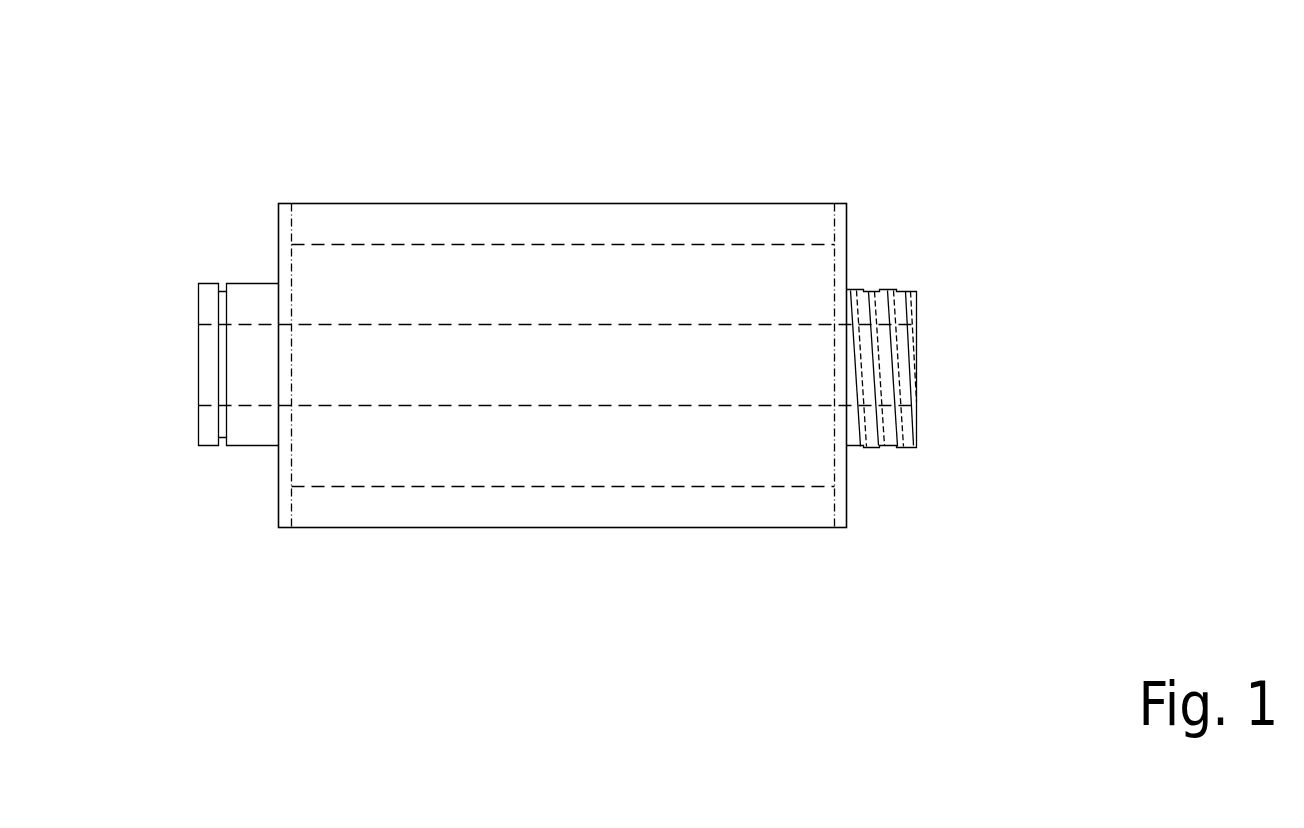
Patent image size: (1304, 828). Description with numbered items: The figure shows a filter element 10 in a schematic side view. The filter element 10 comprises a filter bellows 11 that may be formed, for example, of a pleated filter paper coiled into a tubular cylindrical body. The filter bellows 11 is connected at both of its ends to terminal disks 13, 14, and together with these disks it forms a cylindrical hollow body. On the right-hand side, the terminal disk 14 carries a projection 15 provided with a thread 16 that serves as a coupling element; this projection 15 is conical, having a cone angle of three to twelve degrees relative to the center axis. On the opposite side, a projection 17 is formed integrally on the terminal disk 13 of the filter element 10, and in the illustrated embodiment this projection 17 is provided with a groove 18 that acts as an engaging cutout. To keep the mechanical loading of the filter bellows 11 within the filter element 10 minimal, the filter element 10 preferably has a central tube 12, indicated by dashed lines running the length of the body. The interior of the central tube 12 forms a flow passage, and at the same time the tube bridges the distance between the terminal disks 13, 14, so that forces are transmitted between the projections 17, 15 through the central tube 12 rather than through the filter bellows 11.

The filter element 10 is at (146, 165).
The filter bellows 11 is at (488, 222).
The central tube 12 is at (576, 325).
The terminal disk 13 is at (283, 218).
The terminal disk 14 is at (843, 216).
The projection 15 is at (912, 300).
The thread 16 is at (898, 374).
The projection 17 is at (208, 346).
The groove 18 is at (225, 390).